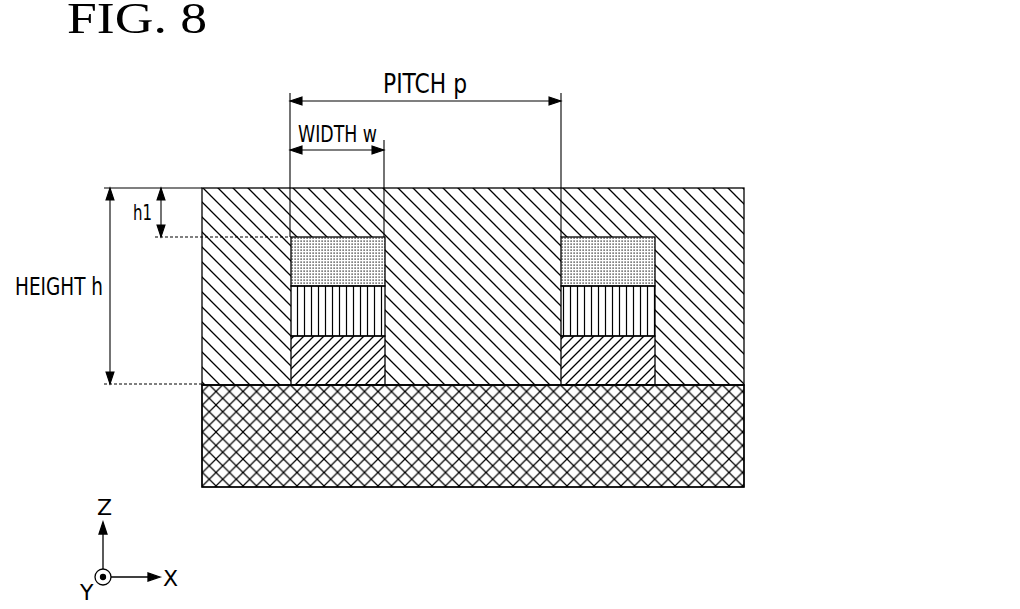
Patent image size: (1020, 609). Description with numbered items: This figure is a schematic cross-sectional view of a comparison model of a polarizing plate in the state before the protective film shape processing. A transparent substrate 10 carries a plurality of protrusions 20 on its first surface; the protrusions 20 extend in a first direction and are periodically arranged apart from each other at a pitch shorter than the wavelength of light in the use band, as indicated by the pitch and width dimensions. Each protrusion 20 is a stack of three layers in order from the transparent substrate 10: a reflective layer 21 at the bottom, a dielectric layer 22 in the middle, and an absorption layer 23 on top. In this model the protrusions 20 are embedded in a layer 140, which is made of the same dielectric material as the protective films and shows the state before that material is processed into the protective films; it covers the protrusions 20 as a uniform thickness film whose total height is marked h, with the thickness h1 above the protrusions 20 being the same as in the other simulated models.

The transparent substrate 10 is at (697, 437).
The layer 140 is at (693, 213).
The protrusion 20 is at (574, 303).
The reflective layer 21 is at (632, 363).
The dielectric layer 22 is at (642, 315).
The absorption layer 23 is at (633, 263).